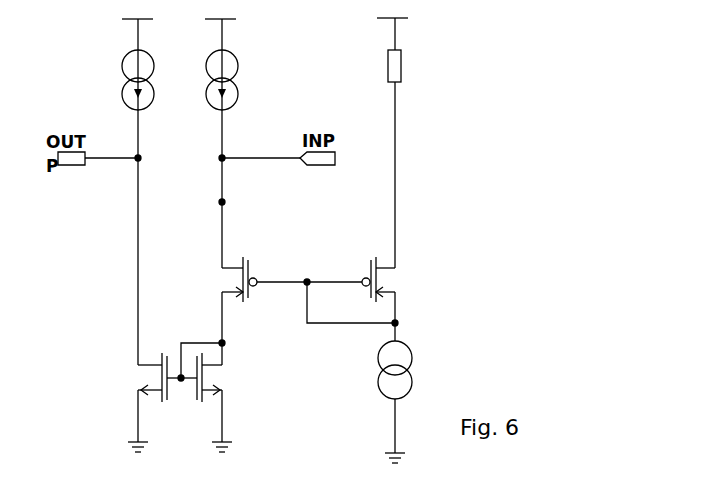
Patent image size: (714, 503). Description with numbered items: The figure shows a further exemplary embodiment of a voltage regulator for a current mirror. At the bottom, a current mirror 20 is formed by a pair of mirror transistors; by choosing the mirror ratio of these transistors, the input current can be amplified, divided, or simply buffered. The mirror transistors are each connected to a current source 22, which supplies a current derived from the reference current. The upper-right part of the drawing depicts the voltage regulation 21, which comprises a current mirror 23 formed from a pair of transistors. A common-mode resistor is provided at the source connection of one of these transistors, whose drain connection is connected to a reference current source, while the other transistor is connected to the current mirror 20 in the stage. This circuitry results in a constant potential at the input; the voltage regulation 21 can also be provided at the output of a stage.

The current mirror 20 is at (112, 398).
The voltage regulation 21 is at (422, 227).
The current source 22 is at (198, 77).
The current mirror 23 is at (360, 255).